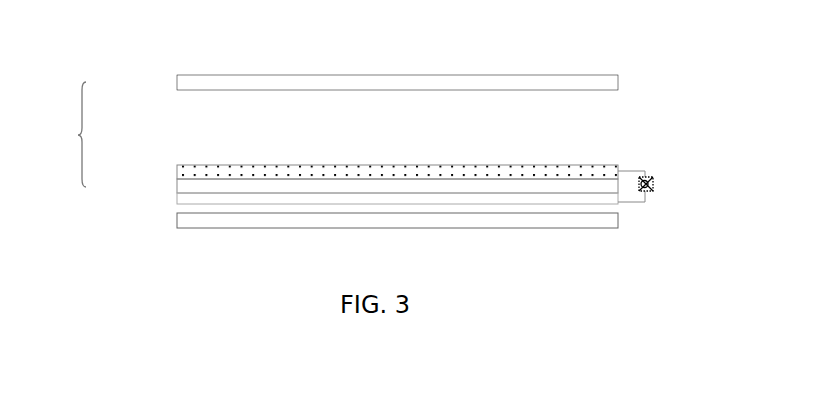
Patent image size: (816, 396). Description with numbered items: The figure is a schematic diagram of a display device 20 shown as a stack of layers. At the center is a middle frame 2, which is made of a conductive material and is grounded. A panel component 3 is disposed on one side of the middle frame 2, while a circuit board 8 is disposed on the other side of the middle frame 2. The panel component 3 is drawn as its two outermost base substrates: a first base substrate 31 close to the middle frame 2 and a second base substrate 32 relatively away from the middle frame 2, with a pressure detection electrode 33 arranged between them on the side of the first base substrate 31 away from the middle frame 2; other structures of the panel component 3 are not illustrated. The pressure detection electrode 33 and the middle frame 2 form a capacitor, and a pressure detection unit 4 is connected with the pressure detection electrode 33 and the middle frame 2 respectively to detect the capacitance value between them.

The display device 20 is at (208, 38).
The panel component 3 is at (333, 136).
The second base substrate 32 is at (190, 83).
The pressure detection electrode 33 is at (203, 170).
The first base substrate 31 is at (190, 187).
The middle frame 2 is at (185, 200).
The circuit board 8 is at (243, 220).
The pressure detection unit 4 is at (653, 184).